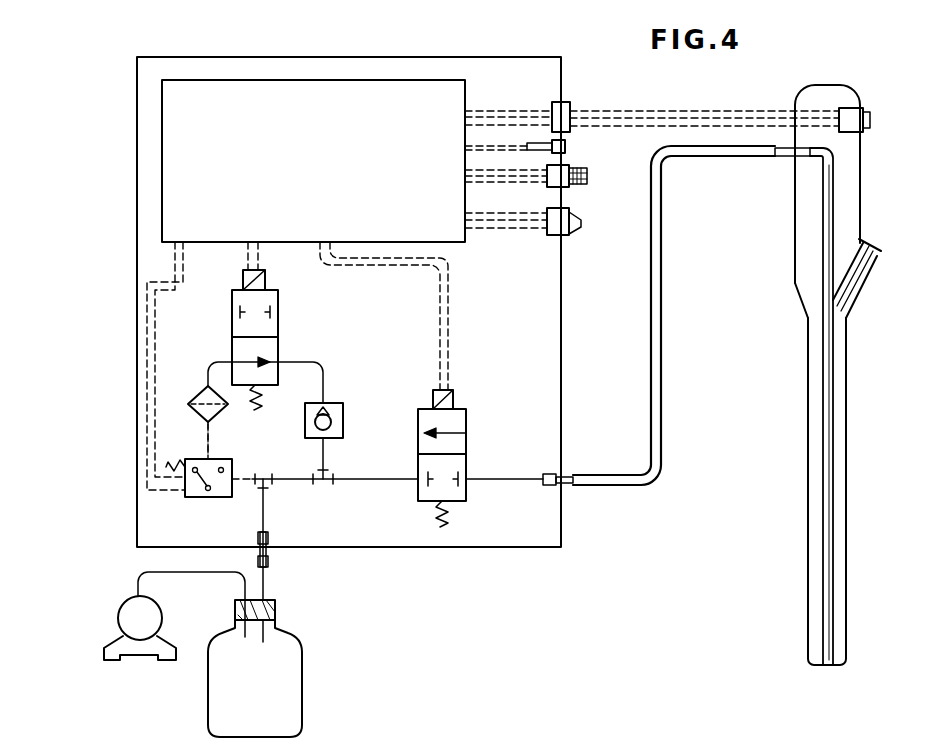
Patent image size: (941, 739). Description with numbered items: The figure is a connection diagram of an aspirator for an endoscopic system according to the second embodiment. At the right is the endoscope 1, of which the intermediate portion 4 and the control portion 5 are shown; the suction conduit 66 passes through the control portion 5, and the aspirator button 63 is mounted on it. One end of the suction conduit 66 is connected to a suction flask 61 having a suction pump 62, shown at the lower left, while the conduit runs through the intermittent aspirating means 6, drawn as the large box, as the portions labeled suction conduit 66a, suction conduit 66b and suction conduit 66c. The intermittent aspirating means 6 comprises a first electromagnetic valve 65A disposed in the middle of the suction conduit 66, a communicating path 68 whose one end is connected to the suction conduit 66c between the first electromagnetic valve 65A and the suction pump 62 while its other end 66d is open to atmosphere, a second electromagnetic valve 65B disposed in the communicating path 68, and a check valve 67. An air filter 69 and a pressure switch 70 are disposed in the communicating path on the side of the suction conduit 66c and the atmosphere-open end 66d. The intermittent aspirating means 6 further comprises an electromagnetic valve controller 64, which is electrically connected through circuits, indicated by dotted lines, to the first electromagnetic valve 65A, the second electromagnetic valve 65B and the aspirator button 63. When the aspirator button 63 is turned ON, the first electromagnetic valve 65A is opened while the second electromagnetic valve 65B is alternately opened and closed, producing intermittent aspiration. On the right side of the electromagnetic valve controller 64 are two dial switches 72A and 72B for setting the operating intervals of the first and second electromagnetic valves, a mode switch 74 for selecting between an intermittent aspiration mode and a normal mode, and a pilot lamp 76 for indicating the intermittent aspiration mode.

The endoscope 1 is at (832, 375).
The intermediate portion 4 is at (846, 620).
The control portion 5 is at (857, 216).
The intermittent aspirating means 6 is at (550, 78).
The suction flask 61 is at (290, 684).
The suction pump 62 is at (118, 618).
The aspirator button 63 is at (871, 126).
The electromagnetic valve controller 64 is at (327, 177).
The first electromagnetic valve 65A is at (460, 448).
The second electromagnetic valve 65B is at (270, 300).
The suction conduit 66 is at (815, 233).
The suction conduit 66a is at (663, 410).
The suction conduit 66b is at (513, 478).
The suction conduit 66c is at (351, 482).
The other end of communicating path 66d is at (210, 432).
The check valve 67 is at (338, 408).
The communicating path 68 is at (327, 458).
The air filter 69 is at (219, 413).
The pressure switch 70 is at (196, 498).
The dial switch 72A is at (602, 192).
The dial switch 72B is at (589, 176).
The mode switch 74 is at (557, 224).
The pilot lamp 76 is at (566, 146).